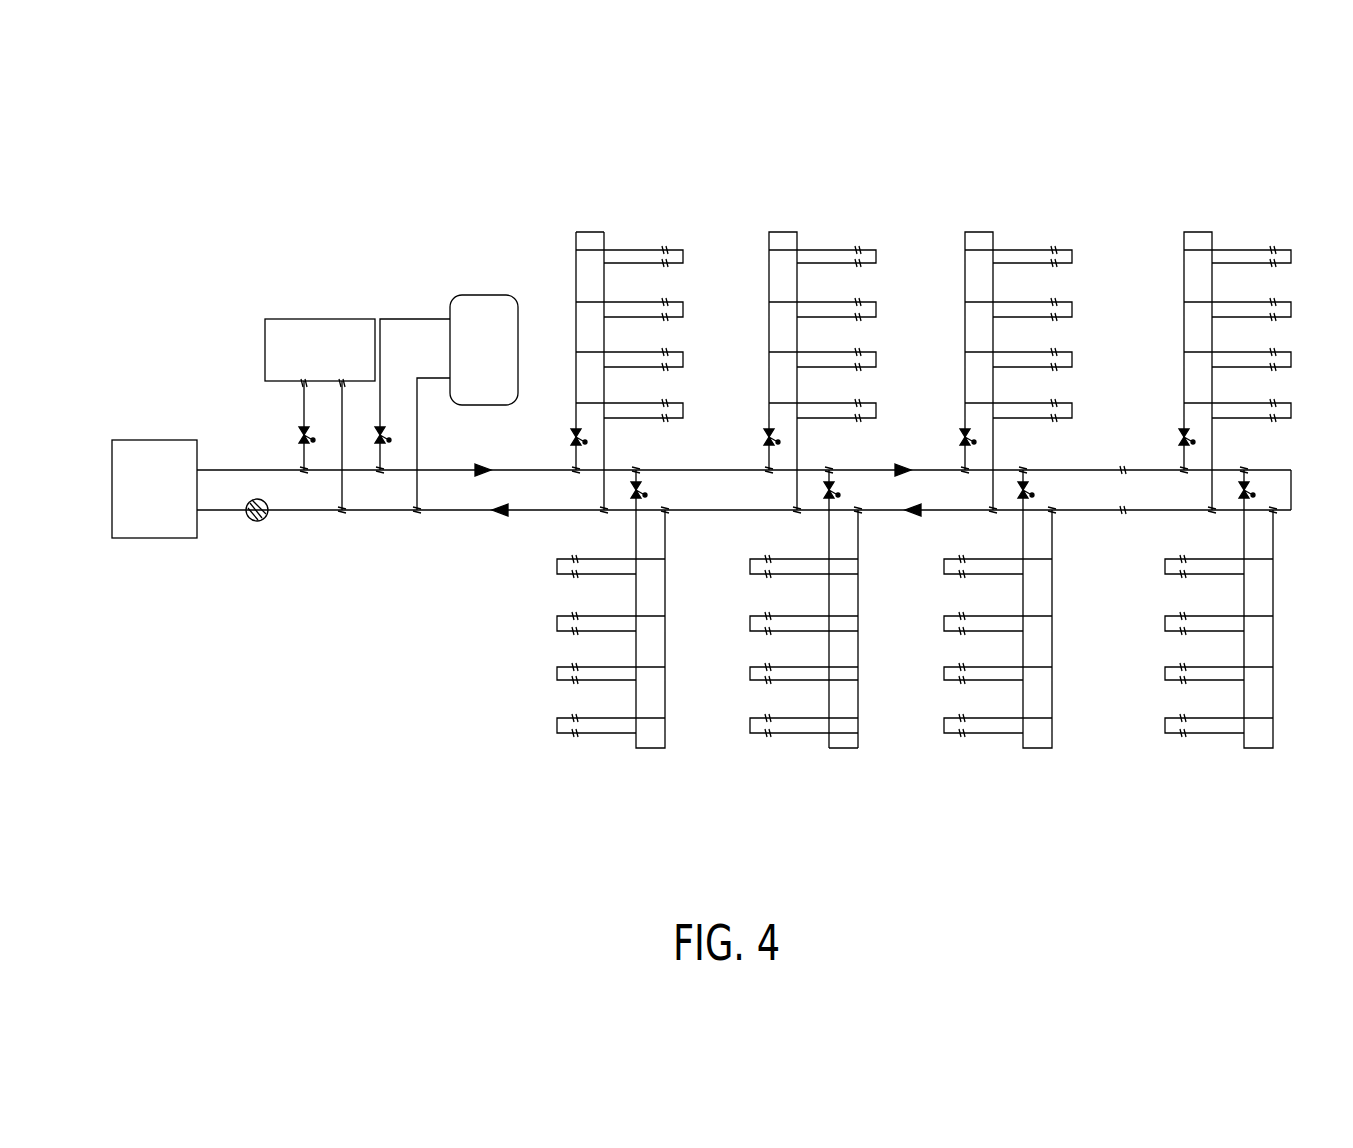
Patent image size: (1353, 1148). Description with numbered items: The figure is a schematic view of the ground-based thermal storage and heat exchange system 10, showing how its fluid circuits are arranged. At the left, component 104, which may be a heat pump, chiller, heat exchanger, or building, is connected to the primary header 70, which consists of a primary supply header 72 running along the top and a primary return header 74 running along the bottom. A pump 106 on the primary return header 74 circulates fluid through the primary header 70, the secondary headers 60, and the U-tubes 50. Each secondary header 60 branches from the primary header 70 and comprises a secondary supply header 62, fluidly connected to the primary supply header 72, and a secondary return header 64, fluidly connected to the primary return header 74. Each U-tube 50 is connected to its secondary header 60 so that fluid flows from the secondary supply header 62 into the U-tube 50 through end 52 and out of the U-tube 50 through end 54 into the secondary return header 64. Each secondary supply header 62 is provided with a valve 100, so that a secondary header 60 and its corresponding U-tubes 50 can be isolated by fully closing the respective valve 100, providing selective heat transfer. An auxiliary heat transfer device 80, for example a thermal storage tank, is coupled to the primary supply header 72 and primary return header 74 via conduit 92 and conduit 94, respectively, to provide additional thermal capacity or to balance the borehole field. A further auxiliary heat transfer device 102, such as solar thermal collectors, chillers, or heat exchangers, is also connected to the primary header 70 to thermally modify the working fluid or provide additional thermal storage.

The ground-based thermal storage and heat exchange system 10 is at (1143, 127).
The U-tube 50 is at (683, 247).
The end 52 is at (576, 245).
The end 54 is at (604, 263).
The secondary header 60 is at (588, 212).
The secondary supply header 62 is at (576, 282).
The secondary return header 64 is at (606, 447).
The primary header 70 is at (318, 517).
The primary supply header 72 is at (236, 468).
The primary return header 74 is at (218, 515).
The auxiliary heat transfer device 80 is at (494, 365).
The conduit 92 is at (405, 318).
The conduit 94 is at (417, 425).
The valve 100 is at (574, 434).
The auxiliary heat transfer device 102 is at (288, 318).
The component 104 is at (170, 503).
The pump 106 is at (256, 521).